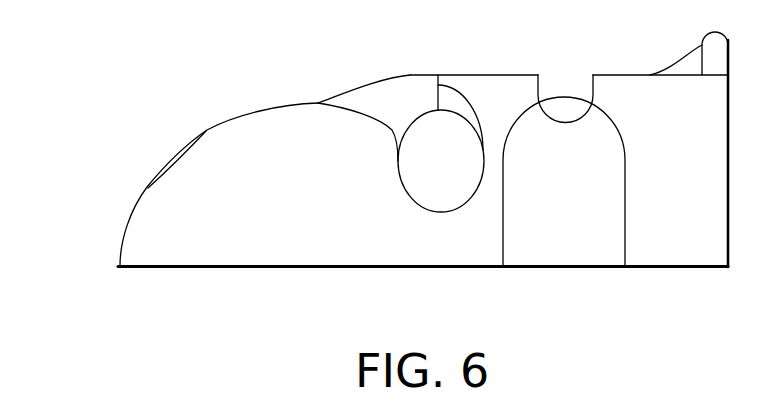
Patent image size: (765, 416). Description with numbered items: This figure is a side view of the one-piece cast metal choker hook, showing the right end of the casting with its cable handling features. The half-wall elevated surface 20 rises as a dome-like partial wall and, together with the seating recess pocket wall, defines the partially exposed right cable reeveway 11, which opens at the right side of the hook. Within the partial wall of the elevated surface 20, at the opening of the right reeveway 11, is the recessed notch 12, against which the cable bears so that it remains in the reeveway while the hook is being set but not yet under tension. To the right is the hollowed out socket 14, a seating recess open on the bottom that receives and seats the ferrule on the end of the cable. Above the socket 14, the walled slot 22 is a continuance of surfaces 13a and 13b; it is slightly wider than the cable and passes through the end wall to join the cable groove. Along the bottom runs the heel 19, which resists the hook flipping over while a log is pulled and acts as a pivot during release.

The right cable reeveway 11 is at (437, 175).
The recessed notch 12 is at (405, 193).
The surface 13a is at (512, 92).
The surface 13b is at (613, 92).
The hollowed out socket 14 is at (565, 190).
The heel 19 is at (120, 266).
The half-wall elevated surface 20 is at (273, 108).
The slot 22 is at (565, 92).